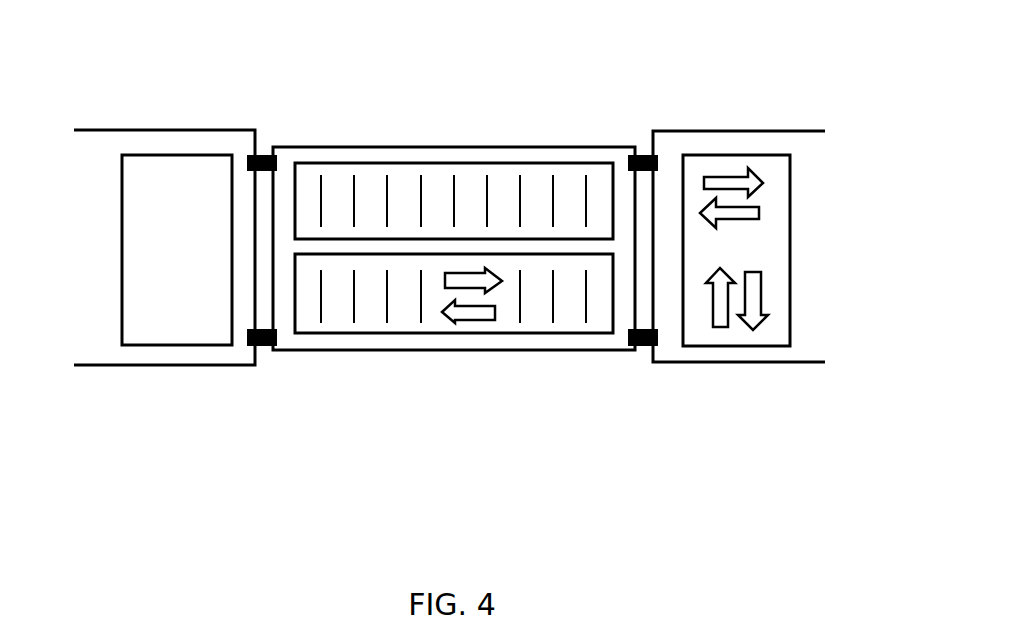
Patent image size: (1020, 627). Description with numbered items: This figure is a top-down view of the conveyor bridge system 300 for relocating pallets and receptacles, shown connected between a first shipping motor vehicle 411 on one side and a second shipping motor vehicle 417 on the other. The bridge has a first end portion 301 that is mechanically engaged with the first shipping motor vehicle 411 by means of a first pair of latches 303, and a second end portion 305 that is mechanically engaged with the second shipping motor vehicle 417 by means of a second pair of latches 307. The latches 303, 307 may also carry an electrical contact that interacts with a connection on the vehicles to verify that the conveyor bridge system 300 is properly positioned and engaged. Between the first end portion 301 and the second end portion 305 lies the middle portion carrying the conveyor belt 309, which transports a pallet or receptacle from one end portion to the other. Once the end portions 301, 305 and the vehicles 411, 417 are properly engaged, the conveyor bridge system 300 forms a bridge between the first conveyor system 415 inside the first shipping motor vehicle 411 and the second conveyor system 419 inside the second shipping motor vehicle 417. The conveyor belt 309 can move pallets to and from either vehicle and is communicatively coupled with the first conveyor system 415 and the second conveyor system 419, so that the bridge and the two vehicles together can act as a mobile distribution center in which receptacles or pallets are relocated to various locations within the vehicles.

The conveyor bridge system 300 is at (403, 131).
The first end portion 301 is at (278, 349).
The first pair of latches 303 is at (264, 154).
The second end portion 305 is at (625, 349).
The second pair of latches 307 is at (643, 154).
The conveyor belt 309 is at (398, 334).
The first shipping motor vehicle 411 is at (157, 131).
The first conveyor system 415 is at (147, 346).
The second shipping motor vehicle 417 is at (743, 131).
The second conveyor system 419 is at (736, 347).